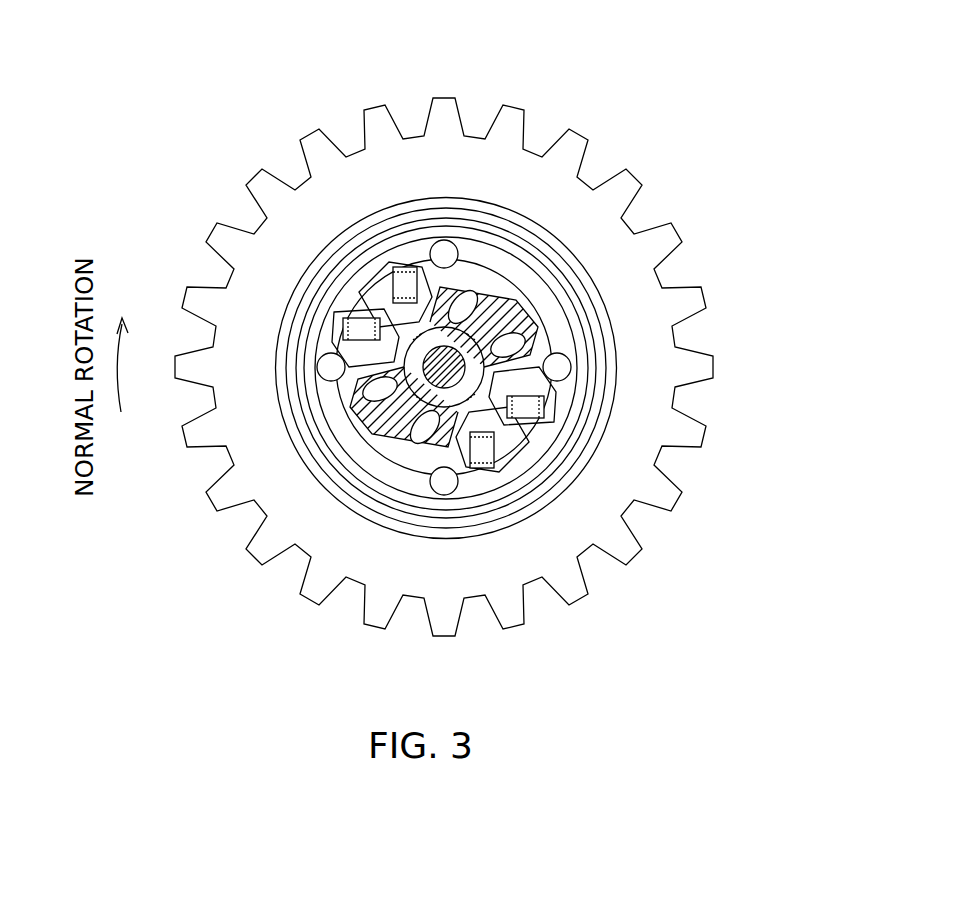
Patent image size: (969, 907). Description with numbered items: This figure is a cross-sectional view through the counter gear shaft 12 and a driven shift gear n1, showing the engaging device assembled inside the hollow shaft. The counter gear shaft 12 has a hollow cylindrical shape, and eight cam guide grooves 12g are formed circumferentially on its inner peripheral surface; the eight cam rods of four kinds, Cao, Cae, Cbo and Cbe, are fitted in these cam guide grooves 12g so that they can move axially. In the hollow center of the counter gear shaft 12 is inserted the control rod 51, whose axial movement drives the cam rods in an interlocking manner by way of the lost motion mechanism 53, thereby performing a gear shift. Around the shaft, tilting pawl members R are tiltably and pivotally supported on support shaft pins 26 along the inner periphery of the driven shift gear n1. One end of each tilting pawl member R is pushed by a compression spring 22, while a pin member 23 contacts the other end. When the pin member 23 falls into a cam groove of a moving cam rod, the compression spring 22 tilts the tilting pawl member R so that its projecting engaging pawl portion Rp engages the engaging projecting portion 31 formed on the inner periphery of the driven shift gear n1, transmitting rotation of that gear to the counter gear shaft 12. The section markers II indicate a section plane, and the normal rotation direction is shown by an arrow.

The counter gear shaft 12 is at (393, 410).
The cam guide grooves 12g is at (208, 387).
The compression spring 22 is at (383, 255).
The pin member 23 is at (463, 296).
The support shaft pin 26 is at (443, 254).
The engaging projecting portion 31 is at (353, 268).
The control rod 51 is at (397, 330).
The lost motion mechanism 53 is at (565, 468).
The driven shift gear n1 is at (593, 177).
The tilting pawl member R is at (456, 325).
The projecting engaging pawl portion Rp is at (415, 300).
The cam rod Cae is at (372, 349).
The cam rod Cao is at (470, 300).
The cam rod Cbe is at (441, 288).
The cam rod Cbo is at (520, 368).
The section line II- II is at (525, 105).